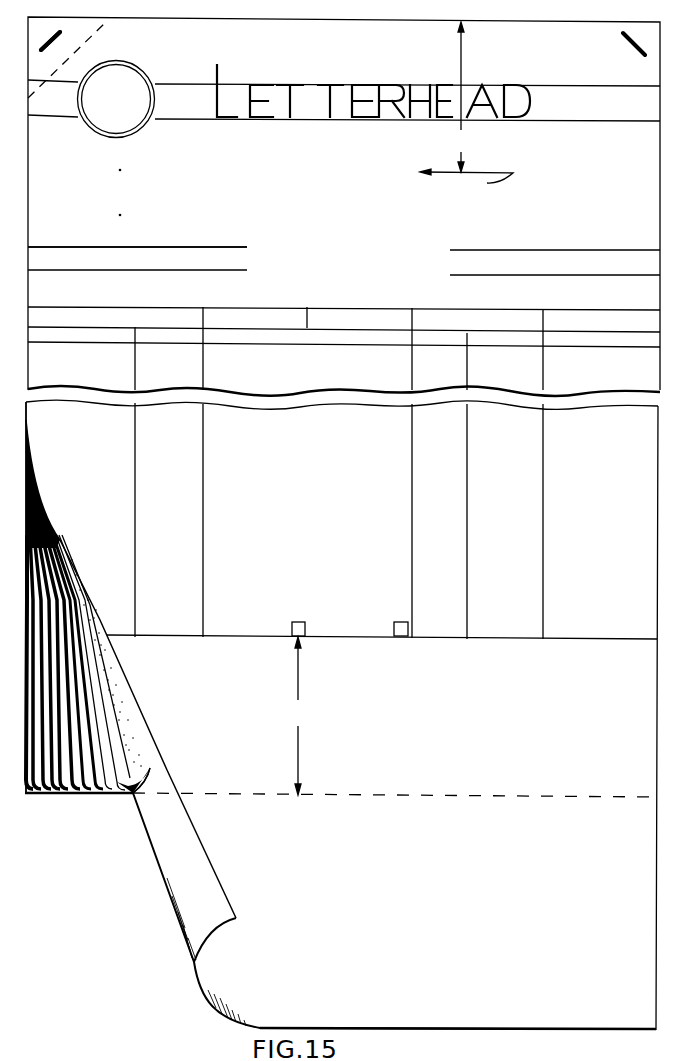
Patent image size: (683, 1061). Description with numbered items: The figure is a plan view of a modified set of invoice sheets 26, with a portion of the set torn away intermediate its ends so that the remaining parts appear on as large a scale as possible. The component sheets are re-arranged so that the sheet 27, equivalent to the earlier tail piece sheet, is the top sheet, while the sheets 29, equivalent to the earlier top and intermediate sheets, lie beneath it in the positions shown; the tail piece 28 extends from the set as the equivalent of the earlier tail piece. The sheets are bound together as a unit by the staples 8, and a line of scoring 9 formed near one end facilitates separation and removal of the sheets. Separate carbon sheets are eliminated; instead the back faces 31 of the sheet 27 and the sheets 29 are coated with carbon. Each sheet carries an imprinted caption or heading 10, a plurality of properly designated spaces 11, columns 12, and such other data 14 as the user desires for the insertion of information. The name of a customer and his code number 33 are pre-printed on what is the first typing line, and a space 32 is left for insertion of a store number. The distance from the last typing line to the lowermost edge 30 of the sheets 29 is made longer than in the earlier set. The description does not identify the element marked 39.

The staples 8 is at (46, 29).
The line of scoring 9 is at (72, 58).
The caption or heading 10 is at (411, 83).
The designated spaces 11 is at (163, 232).
The columns 12 is at (337, 370).
The other data 14 is at (452, 303).
The set of invoice sheets 26 is at (27, 208).
The top sheet 27 is at (106, 594).
The tail piece 28 is at (220, 896).
The sheets 29 is at (30, 794).
The lowermost edge 30 is at (103, 794).
The back faces 31 is at (143, 770).
The space 32 is at (176, 144).
The name of a customer and his code number 33 is at (316, 167).
The bottom edge of sheet 39 is at (421, 1015).